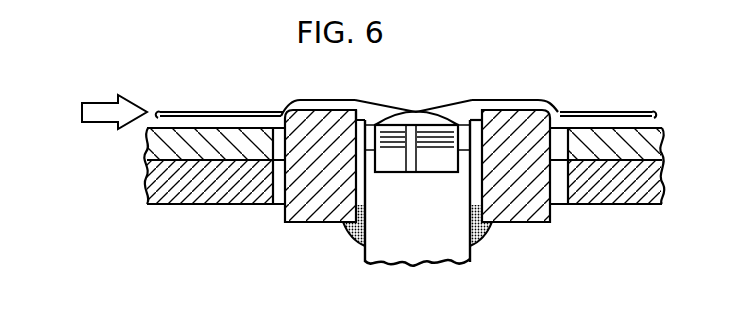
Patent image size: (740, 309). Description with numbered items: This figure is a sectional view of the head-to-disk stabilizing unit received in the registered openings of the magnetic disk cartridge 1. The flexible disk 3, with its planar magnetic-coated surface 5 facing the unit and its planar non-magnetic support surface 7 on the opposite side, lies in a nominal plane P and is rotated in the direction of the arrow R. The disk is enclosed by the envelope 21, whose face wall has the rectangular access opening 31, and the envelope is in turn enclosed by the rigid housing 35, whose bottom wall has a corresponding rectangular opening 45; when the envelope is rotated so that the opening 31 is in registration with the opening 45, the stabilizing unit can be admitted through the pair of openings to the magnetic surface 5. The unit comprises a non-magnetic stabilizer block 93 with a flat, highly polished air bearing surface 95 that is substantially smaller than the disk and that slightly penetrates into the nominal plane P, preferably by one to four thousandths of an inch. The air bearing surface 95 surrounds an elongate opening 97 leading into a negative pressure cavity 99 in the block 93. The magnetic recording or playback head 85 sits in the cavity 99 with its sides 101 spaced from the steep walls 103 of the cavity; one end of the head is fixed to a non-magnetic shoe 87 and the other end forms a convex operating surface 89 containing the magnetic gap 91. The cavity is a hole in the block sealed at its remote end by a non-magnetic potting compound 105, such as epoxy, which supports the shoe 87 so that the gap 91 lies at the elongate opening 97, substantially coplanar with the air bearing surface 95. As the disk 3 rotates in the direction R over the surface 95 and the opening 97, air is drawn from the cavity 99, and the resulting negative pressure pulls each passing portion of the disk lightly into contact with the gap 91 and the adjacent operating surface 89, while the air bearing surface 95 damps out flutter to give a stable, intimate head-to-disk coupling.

The magnetic disk cartridge 1 is at (379, 188).
The envelope 21 is at (147, 152).
The housing 35 is at (146, 204).
The access opening 31 is at (262, 147).
The opening 45 is at (280, 206).
The flexible disk 3 is at (244, 106).
The magnetic-coated surface 5 is at (172, 114).
The non-magnetic support surface 7 is at (236, 112).
The nominal plane of the disk P is at (406, 86).
The direction of disk rotation R is at (95, 90).
The stabilizer block 93 is at (292, 102).
The air bearing surface 95 is at (336, 100).
The elongate opening 97 is at (470, 102).
The operating surface 89 is at (386, 108).
The magnetic gap 91 is at (416, 111).
The negative pressure cavity 99 is at (452, 108).
The non-magnetic shoe 87 is at (478, 260).
The sides of the magnetic head 101 is at (376, 160).
The magnetic recording or playback head 85 is at (442, 181).
The steep walls of the cavity 103 is at (354, 193).
The non-magnetic potting compound 105 is at (492, 241).